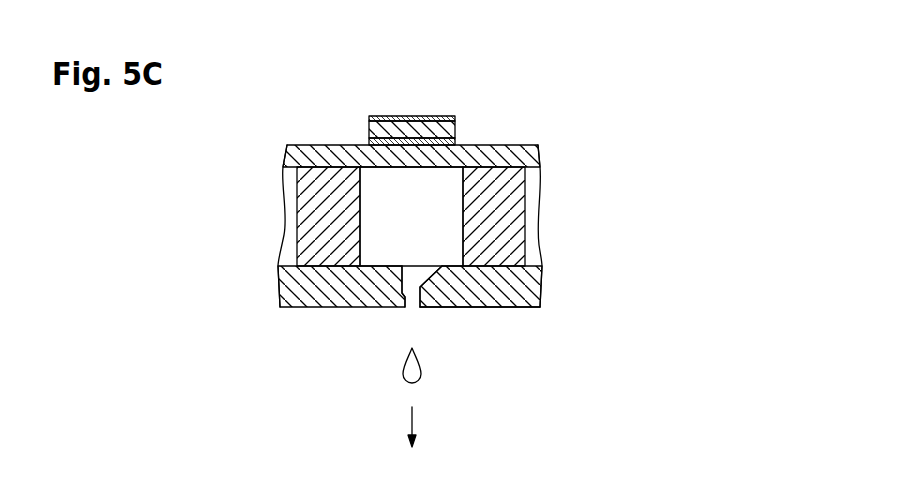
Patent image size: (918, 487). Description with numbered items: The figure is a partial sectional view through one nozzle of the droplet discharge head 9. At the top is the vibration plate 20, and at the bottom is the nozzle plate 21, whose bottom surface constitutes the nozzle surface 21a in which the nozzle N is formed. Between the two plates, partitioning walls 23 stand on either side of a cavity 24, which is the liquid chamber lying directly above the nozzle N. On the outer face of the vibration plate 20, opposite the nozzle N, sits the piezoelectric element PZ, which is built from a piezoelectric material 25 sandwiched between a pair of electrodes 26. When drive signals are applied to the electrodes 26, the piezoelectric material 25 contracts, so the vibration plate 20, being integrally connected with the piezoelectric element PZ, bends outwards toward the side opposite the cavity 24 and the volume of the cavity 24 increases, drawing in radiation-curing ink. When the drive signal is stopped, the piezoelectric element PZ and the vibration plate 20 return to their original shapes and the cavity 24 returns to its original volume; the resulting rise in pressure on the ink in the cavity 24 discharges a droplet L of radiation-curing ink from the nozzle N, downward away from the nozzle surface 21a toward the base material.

The droplet discharge head 9 is at (587, 122).
The vibration plate 20 is at (288, 153).
The nozzle plate 21 is at (530, 298).
The nozzle surface 21a is at (510, 307).
The partitioning wall 23 is at (300, 220).
The cavity 24 is at (442, 207).
The piezoelectric material 25 is at (455, 128).
The electrode 26 is at (395, 116).
The piezoelectric element PZ is at (425, 110).
The nozzle N is at (407, 307).
The droplet L is at (422, 372).